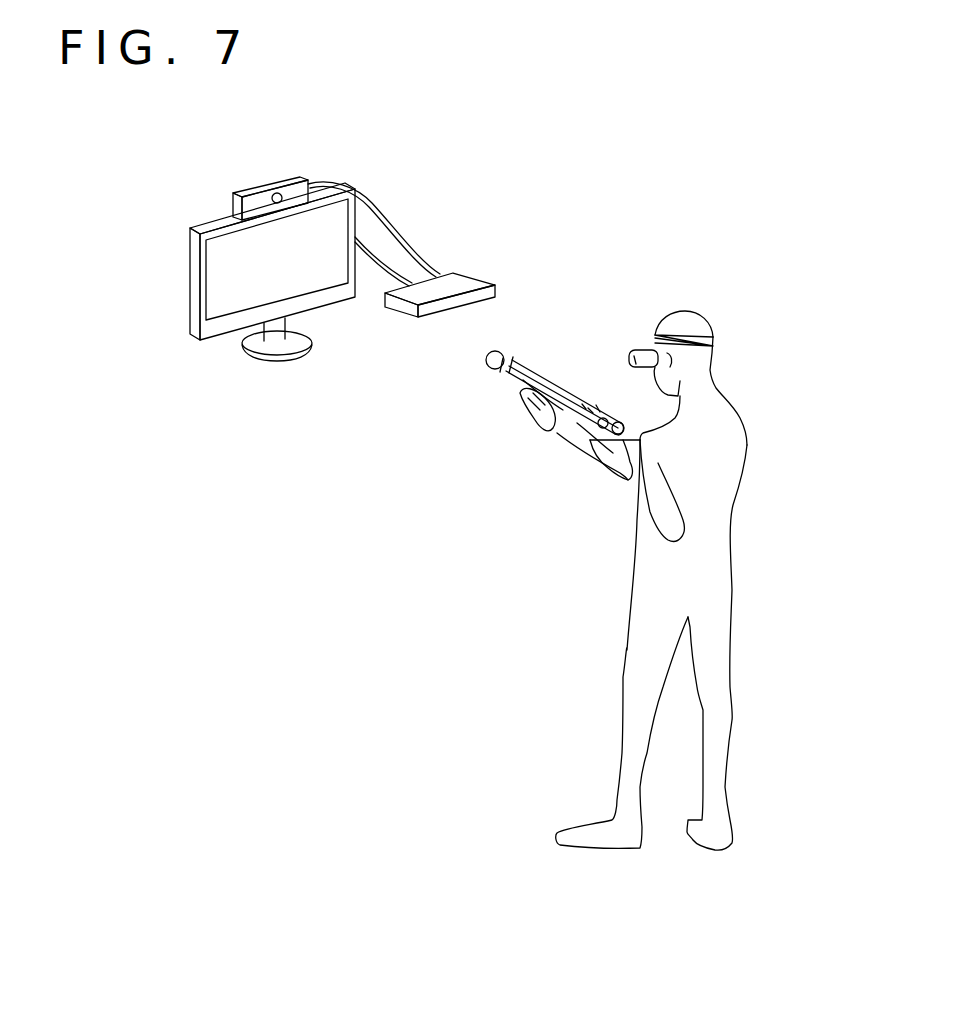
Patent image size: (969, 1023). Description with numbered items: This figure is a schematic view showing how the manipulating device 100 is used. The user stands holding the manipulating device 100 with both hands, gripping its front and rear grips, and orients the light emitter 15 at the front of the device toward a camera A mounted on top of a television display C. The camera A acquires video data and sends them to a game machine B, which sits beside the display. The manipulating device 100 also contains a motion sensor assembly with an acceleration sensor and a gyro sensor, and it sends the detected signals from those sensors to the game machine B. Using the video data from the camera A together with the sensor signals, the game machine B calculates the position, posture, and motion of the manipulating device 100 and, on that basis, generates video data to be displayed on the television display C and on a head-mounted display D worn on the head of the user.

The camera A is at (262, 186).
The game machine B is at (460, 282).
The television display C is at (190, 290).
The head-mounted display D is at (631, 348).
The light emitter 15 is at (500, 351).
The manipulating device 100 is at (560, 446).